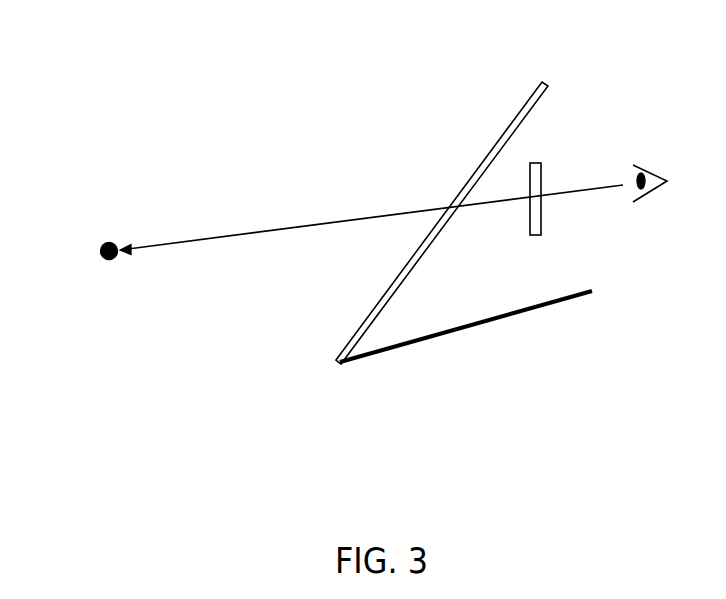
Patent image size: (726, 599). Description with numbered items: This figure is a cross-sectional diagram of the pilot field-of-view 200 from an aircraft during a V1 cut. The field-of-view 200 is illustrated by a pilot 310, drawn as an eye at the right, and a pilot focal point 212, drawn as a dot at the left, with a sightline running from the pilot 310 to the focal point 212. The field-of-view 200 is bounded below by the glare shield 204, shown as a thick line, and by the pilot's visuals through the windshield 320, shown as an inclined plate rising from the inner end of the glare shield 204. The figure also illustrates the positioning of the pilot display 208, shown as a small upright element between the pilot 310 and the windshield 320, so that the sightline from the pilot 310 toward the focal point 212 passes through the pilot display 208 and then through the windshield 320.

The pilot field-of-view 200 is at (135, 65).
The glare shield 204 is at (530, 312).
The pilot display 208 is at (541, 162).
The pilot focal point 212 is at (101, 245).
The pilot 310 is at (647, 195).
The windshield 320 is at (354, 335).